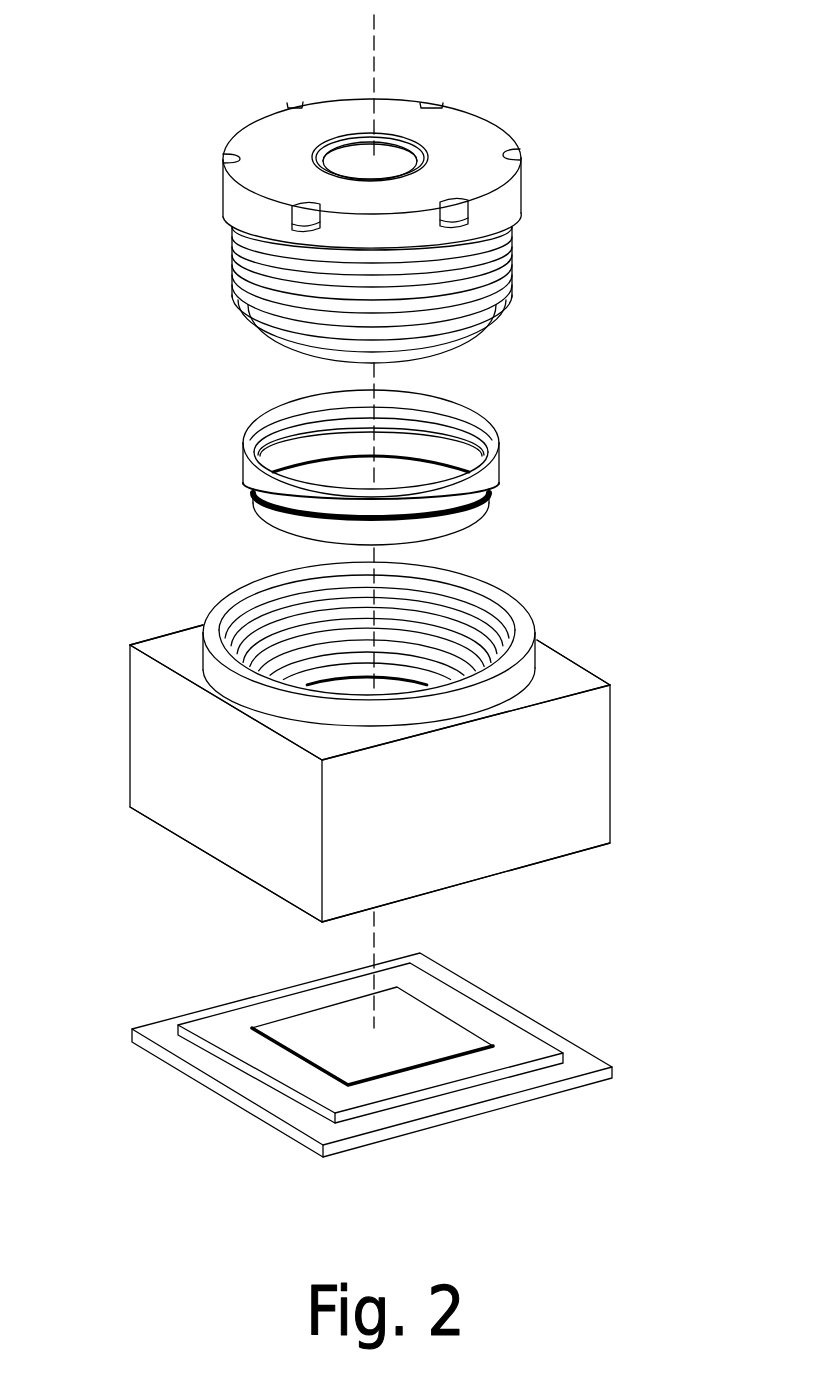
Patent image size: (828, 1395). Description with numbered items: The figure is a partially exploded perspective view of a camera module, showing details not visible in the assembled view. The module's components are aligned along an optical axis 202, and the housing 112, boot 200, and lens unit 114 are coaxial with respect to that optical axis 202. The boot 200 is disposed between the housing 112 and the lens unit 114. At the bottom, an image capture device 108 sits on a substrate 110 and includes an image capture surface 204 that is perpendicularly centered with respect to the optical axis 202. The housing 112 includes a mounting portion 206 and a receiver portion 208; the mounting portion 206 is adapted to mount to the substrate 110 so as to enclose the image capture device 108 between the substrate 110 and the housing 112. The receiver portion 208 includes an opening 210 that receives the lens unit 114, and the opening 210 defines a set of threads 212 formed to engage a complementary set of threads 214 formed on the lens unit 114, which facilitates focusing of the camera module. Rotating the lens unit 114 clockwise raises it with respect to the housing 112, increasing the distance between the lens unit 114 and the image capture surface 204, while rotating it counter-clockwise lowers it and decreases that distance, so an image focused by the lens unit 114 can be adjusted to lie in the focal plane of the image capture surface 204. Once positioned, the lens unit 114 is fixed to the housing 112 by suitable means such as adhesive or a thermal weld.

The optical axis 202 is at (377, 77).
The lens unit 114 is at (258, 143).
The set of threads 214 is at (510, 250).
The boot 200 is at (494, 485).
The set of threads 212 is at (272, 605).
The opening 210 is at (463, 630).
The receiver portion 208 is at (165, 648).
The housing 112 is at (142, 740).
The mounting portion 206 is at (586, 852).
The image capture surface 204 is at (421, 1012).
The image capture device 108 is at (228, 1052).
The substrate 110 is at (263, 1115).